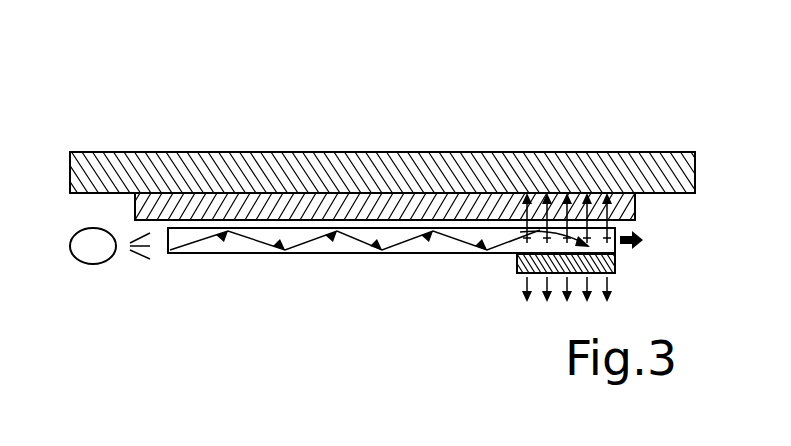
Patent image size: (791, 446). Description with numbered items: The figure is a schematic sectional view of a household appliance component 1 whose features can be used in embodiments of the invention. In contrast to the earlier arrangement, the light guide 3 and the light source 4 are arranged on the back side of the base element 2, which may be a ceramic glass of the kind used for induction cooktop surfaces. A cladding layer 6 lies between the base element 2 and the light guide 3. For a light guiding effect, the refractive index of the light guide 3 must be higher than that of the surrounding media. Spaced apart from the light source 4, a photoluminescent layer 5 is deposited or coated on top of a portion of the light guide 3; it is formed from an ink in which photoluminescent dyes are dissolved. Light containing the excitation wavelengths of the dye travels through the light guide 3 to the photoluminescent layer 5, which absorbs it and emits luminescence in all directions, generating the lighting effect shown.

The household appliance component 1 is at (690, 110).
The base element 2 is at (695, 173).
The light guide 3 is at (260, 248).
The light source 4 is at (85, 260).
The photoluminescent layer 5 is at (530, 263).
The cladding layer 6 is at (455, 203).